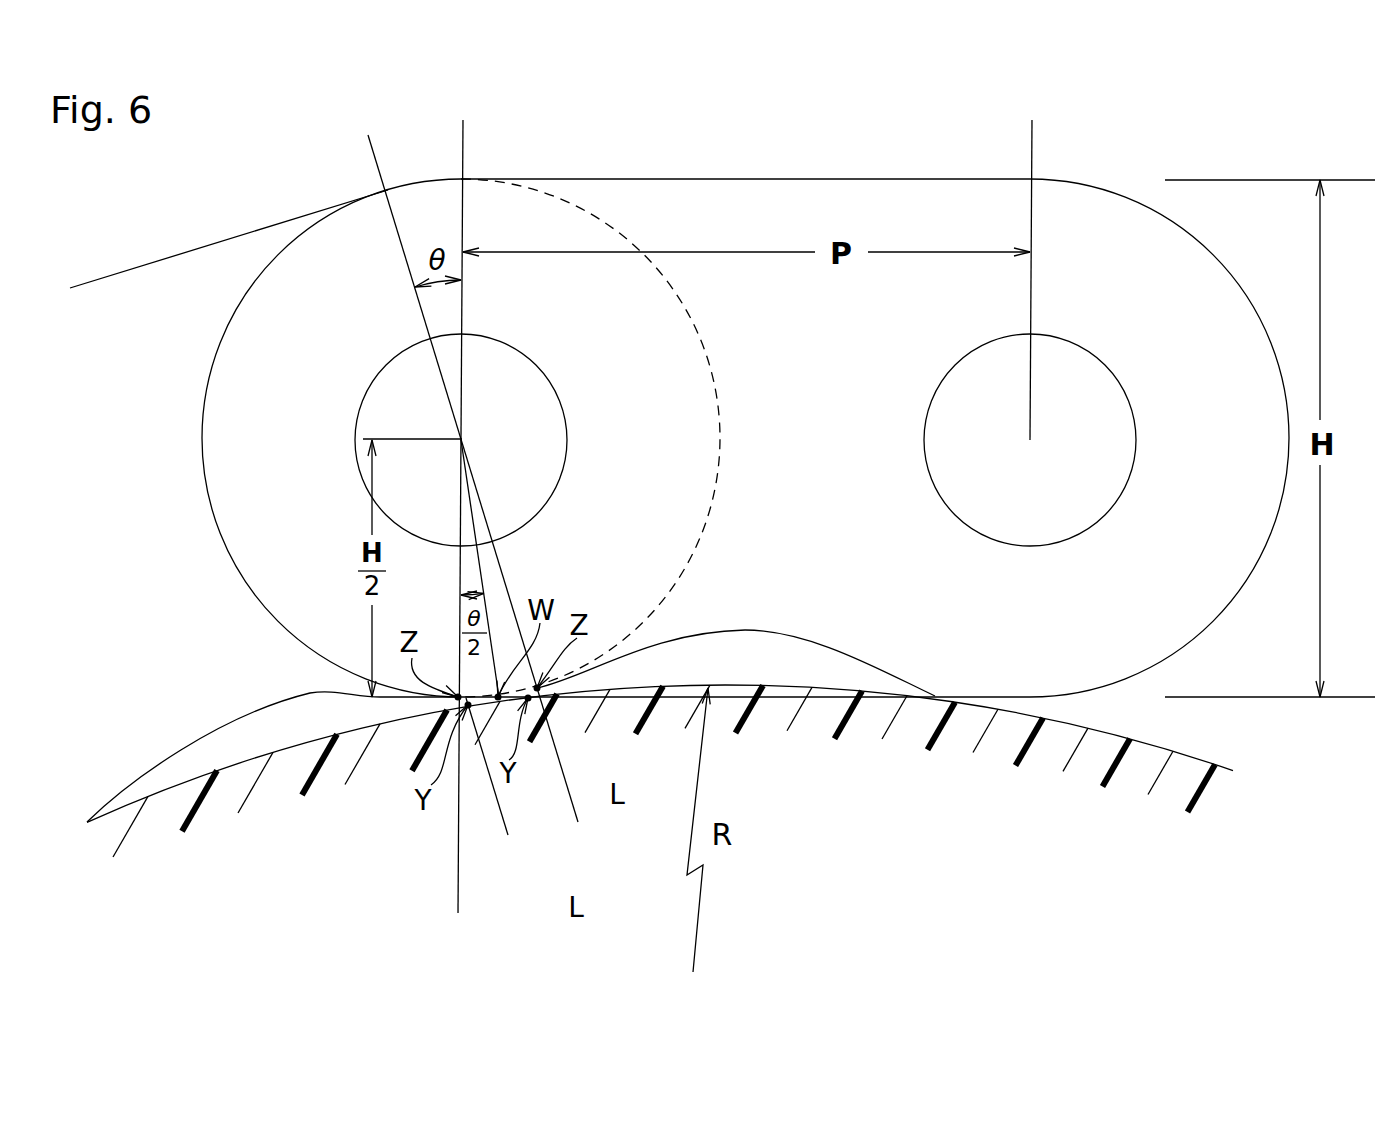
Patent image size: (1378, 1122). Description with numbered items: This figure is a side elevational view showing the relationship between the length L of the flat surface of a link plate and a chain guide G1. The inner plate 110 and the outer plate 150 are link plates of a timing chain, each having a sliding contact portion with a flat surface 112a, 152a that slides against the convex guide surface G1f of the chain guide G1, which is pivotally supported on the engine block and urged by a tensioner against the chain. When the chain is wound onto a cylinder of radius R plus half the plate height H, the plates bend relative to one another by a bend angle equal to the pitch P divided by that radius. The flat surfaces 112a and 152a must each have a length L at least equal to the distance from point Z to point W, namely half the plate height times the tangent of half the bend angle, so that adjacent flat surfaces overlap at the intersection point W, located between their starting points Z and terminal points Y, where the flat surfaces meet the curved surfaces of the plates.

The inner plate 110 is at (180, 255).
The outer plate 150 is at (787, 192).
The flat surface 152a is at (528, 698).
The flat surface 112a is at (603, 801).
The chain guide G1 is at (328, 828).
The convex guide surface G1f is at (758, 686).